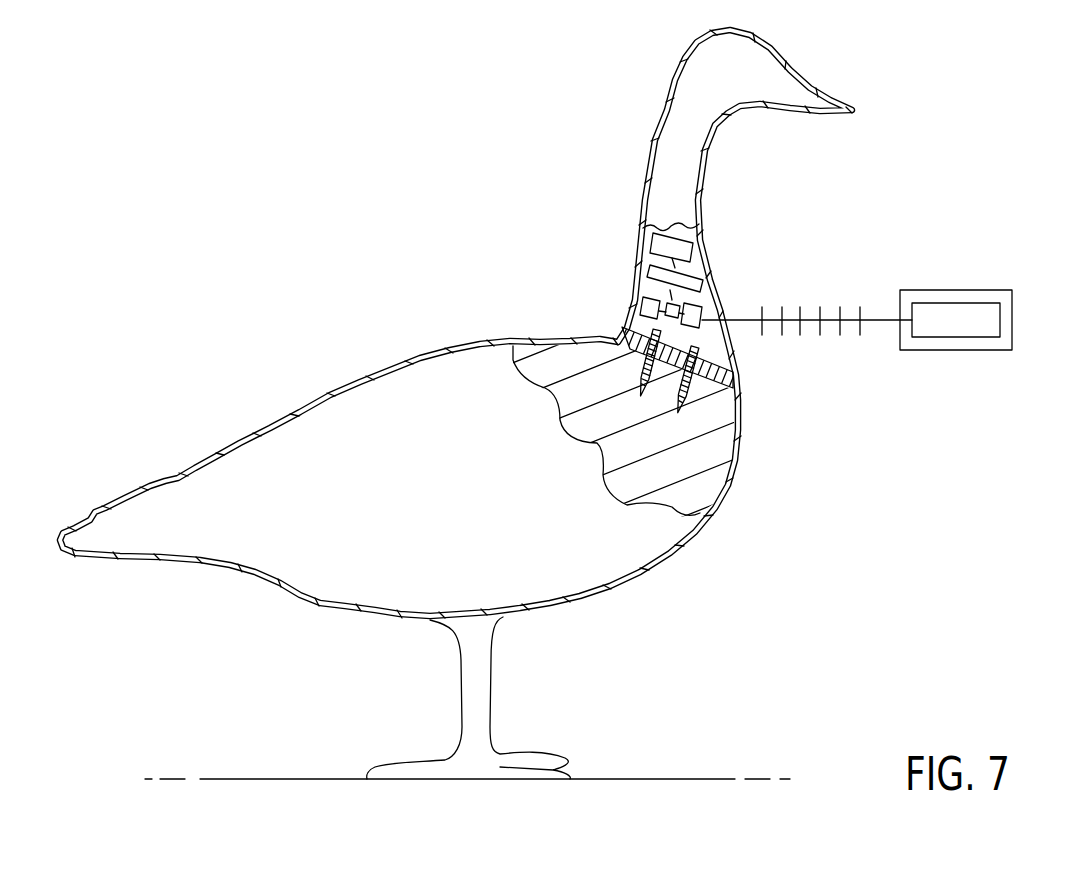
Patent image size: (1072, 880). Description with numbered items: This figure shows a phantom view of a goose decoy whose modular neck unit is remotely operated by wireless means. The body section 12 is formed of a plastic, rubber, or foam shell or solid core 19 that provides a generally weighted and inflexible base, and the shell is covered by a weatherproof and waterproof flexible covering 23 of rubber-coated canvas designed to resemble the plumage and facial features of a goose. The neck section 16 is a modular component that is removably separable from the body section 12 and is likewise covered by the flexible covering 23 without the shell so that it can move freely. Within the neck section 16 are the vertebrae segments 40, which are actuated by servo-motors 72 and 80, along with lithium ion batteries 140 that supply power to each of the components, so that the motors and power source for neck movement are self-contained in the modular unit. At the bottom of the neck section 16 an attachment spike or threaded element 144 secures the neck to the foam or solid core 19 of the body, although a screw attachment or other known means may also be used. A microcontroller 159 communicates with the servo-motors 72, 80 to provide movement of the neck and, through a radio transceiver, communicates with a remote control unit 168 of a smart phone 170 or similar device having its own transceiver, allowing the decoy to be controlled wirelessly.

The body section 12 is at (536, 404).
The neck section 16 is at (634, 135).
The shell or solid core 19 is at (705, 483).
The flexible covering 23 is at (668, 70).
The vertebrae segments 40 is at (660, 242).
The servo-motor 72 is at (660, 275).
The servo-motor 80 is at (655, 308).
The lithium ion batteries 140 is at (737, 343).
The attachment spike or threaded element 144 is at (676, 400).
The microcontroller 159 is at (700, 312).
The remote control unit 168 is at (960, 327).
The smart phone 170 is at (955, 290).